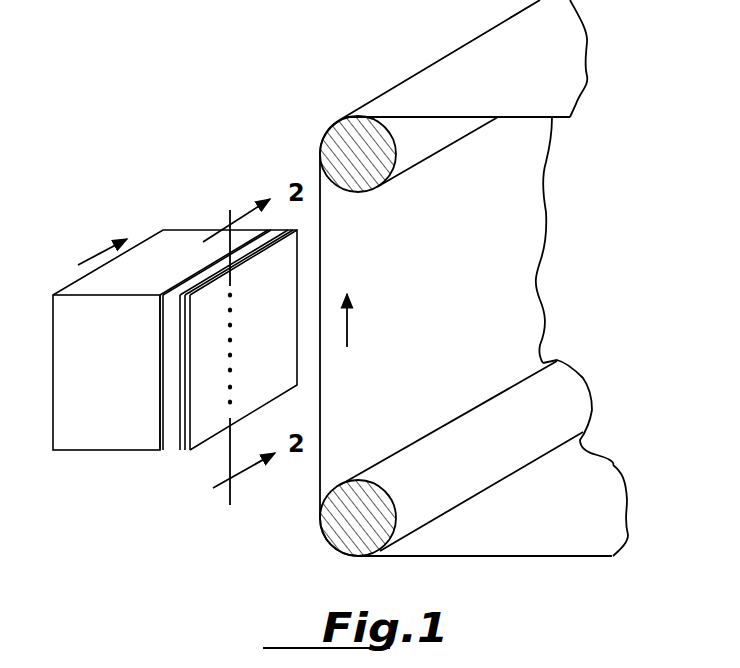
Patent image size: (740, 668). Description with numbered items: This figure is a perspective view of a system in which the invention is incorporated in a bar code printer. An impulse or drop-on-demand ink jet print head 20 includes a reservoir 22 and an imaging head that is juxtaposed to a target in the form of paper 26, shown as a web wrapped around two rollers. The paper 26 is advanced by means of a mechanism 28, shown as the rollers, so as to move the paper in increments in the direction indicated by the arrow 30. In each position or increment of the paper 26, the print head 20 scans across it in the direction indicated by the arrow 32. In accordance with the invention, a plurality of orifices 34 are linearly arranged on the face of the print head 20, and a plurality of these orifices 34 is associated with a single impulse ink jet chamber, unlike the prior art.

The ink jet print head 20 is at (125, 452).
The reservoir 22 is at (167, 250).
The paper 26 is at (500, 278).
The mechanism 28 is at (375, 158).
The arrow 30 is at (348, 336).
The arrow 32 is at (97, 253).
The orifices 34 is at (234, 371).